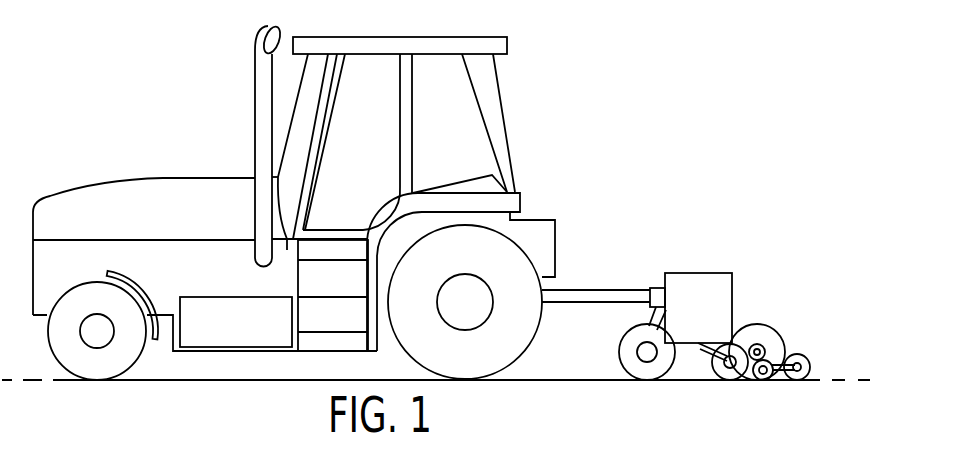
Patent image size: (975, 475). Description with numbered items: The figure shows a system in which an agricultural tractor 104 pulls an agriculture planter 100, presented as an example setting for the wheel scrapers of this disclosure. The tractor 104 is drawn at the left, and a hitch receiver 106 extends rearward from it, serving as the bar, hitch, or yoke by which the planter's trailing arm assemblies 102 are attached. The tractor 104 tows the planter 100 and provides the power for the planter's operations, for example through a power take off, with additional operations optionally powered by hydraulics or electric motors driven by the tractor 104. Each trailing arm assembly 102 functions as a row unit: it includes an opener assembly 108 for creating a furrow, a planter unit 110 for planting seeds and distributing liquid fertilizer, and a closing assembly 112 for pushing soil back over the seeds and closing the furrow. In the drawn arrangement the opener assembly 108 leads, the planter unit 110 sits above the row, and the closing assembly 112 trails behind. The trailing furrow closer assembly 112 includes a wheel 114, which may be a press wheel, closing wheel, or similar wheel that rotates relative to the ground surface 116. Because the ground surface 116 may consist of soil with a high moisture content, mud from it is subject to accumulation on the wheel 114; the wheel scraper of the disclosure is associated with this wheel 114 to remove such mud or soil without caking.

The agriculture planter 100 is at (699, 205).
The trailing arm assembly 102 is at (759, 317).
The agricultural tractor 104 is at (497, 95).
The hitch receiver 106 is at (590, 290).
The opener assembly 108 is at (753, 398).
The planter unit 110 is at (732, 302).
The closing assembly 112 is at (799, 374).
The wheel 114 is at (804, 350).
The ground surface 116 is at (540, 379).